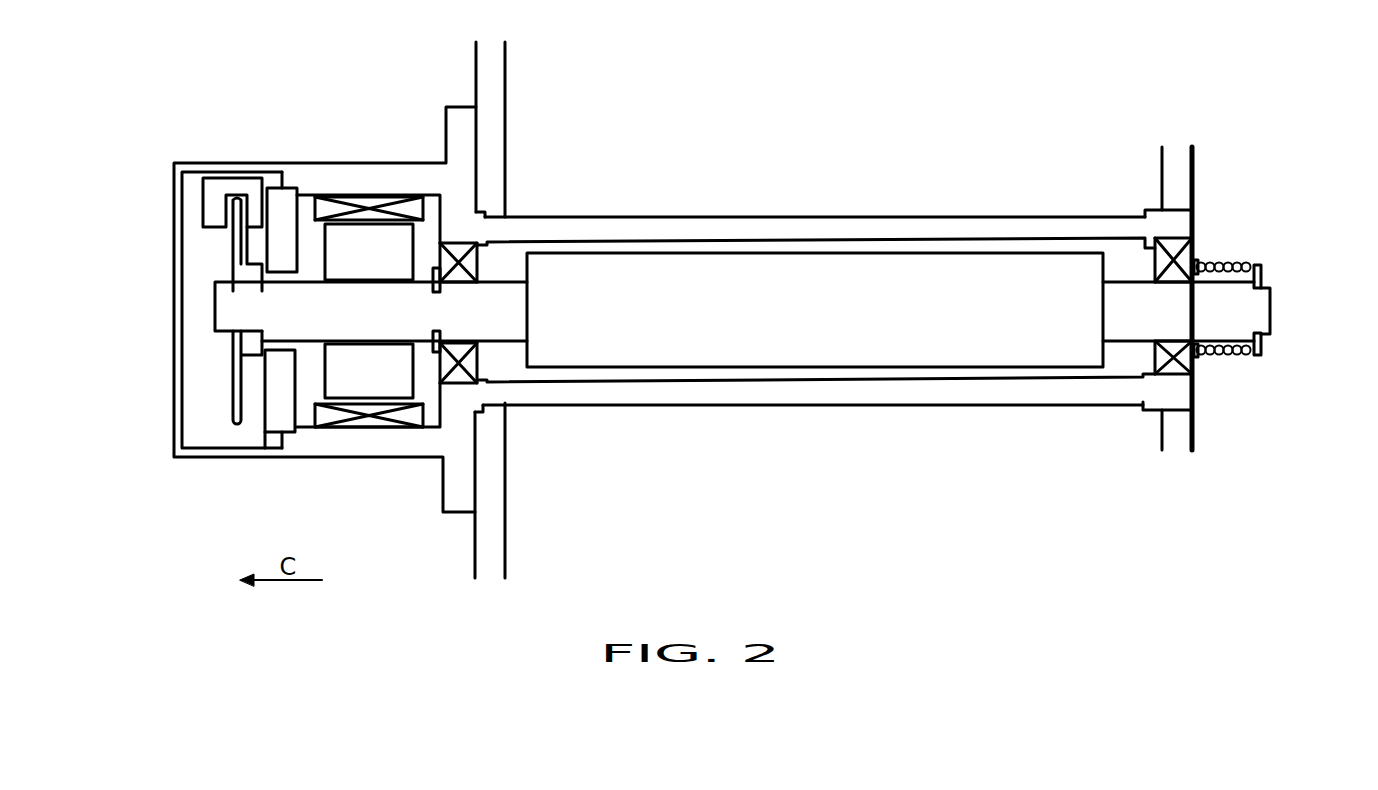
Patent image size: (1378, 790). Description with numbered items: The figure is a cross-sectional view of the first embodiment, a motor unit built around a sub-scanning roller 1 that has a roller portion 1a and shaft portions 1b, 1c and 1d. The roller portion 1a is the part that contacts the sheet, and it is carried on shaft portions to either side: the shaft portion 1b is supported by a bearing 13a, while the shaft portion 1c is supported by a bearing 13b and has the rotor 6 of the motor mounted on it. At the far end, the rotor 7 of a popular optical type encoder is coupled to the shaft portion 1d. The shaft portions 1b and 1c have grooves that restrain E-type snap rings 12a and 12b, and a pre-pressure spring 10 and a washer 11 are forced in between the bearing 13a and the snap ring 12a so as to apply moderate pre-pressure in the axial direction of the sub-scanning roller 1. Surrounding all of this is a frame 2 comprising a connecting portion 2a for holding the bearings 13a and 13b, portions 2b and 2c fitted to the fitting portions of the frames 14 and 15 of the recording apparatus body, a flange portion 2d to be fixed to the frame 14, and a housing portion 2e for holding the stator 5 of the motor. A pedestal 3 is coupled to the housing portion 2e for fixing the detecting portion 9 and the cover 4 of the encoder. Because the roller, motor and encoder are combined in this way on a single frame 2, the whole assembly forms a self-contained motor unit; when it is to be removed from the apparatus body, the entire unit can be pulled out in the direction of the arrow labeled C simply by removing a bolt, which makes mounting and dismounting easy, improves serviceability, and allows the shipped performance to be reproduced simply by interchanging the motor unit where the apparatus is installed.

The sub-scanning roller 1 is at (815, 255).
The roller portion 1a is at (993, 265).
The shaft portion 1b is at (1140, 330).
The shaft portion 1c is at (372, 328).
The shaft portion 1d is at (223, 315).
The frame 2 is at (833, 249).
The connecting portion 2a is at (703, 218).
The fitted portion 2b is at (1152, 207).
The fitted portion 2c is at (483, 212).
The flange portion 2d is at (455, 120).
The housing portion 2e is at (372, 163).
The pedestal 3 is at (277, 180).
The cover 4 is at (193, 162).
The stator 5 is at (353, 198).
The rotor 6 is at (340, 238).
The rotor 7 is at (232, 242).
The detecting portion 9 is at (218, 183).
The pre-pressure spring 10 is at (1240, 262).
The washer 11 is at (1200, 260).
The E-type snap ring 12a is at (1261, 273).
The E-type snap ring 12b is at (437, 347).
The bearing 13a is at (1185, 240).
The bearing 13b is at (452, 243).
The frame 14 is at (478, 68).
The frame 15 is at (1193, 158).